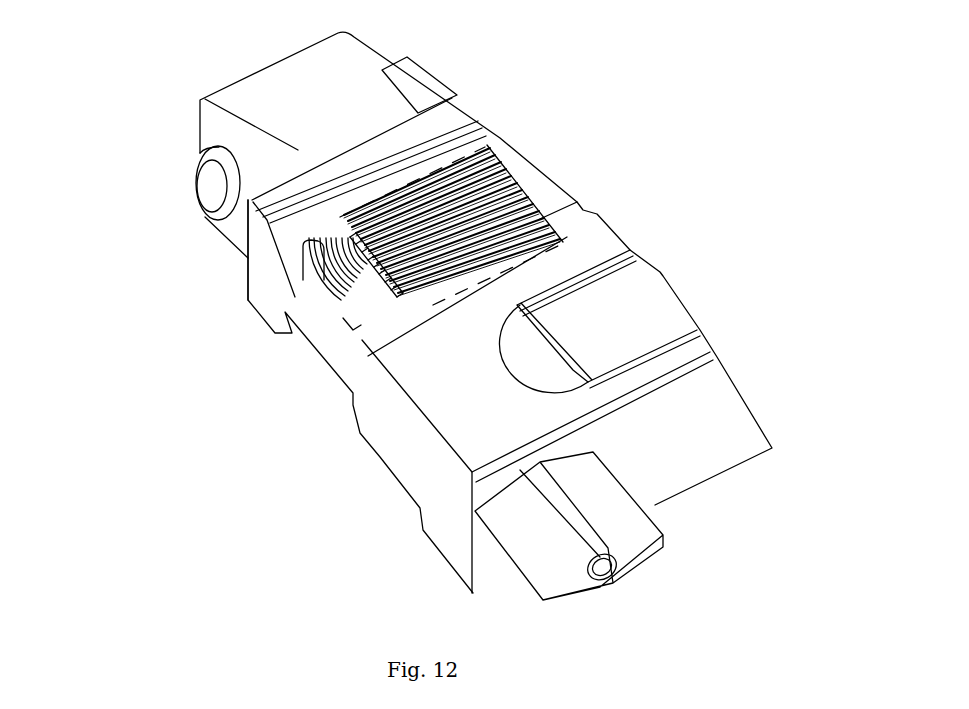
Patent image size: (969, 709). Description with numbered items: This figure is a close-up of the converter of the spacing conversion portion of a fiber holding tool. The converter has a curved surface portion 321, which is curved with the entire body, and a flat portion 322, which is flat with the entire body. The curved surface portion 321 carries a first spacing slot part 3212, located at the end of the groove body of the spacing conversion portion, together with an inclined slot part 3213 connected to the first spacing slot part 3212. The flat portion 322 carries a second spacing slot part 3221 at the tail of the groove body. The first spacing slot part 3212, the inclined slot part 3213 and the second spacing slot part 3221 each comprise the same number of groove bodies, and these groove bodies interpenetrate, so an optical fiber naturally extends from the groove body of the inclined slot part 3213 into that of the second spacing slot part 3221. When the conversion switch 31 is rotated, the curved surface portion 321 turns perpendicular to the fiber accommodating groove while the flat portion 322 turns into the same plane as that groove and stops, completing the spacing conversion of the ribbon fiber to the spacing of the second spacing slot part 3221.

The conversion switch 31 is at (517, 553).
The curved surface portion 321 is at (255, 255).
The flat portion 322 is at (362, 177).
The first spacing slot part 3212 is at (290, 297).
The inclined slot part 3213 is at (345, 313).
The second spacing slot part 3221 is at (415, 283).